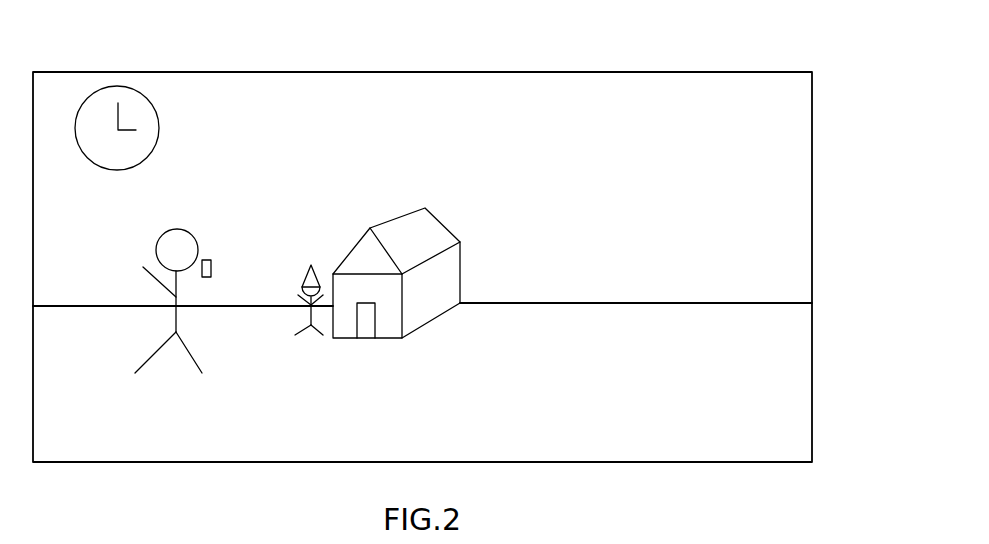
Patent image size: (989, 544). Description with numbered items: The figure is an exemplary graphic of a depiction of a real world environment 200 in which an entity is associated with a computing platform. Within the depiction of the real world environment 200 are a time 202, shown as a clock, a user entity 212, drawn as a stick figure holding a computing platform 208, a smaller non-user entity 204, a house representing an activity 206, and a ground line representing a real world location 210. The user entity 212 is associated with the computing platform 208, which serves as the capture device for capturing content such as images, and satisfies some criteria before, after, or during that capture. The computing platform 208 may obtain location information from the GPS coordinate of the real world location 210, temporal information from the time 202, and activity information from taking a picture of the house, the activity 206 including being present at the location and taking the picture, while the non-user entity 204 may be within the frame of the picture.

The real world environment 200 is at (718, 55).
The time 202 is at (159, 122).
The non-user entity 204 is at (313, 270).
The activity 206 is at (440, 220).
The computing platform 208 is at (176, 297).
The location 210 is at (643, 302).
The user entity 212 is at (188, 231).